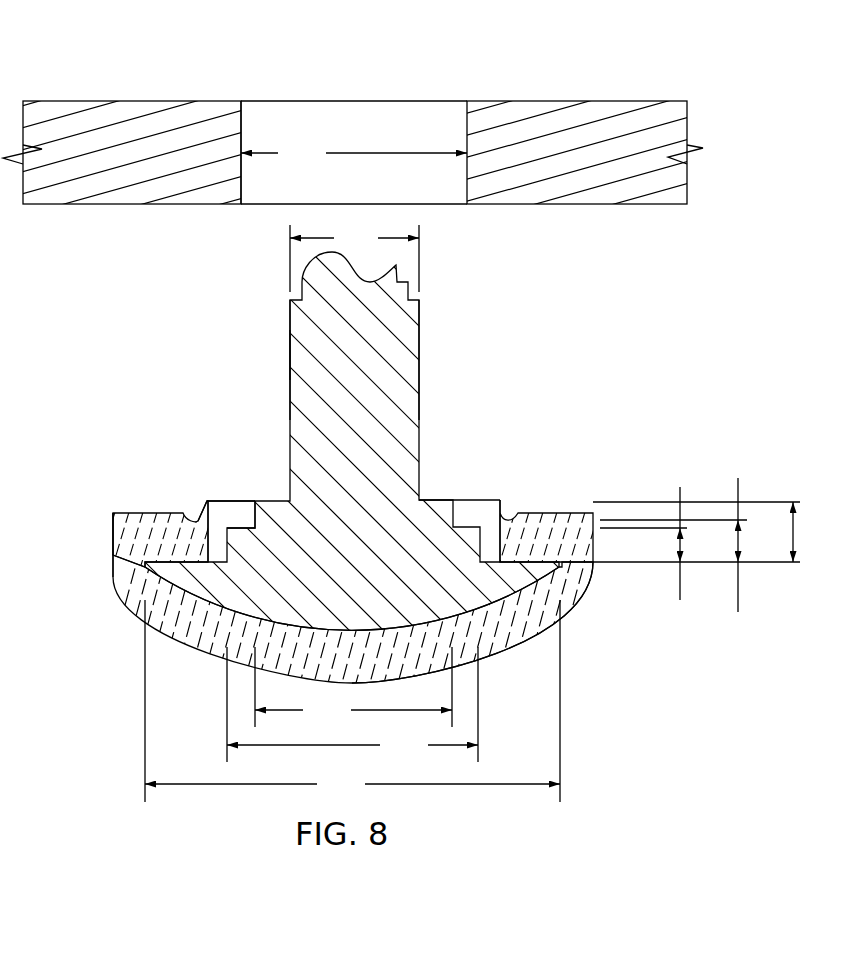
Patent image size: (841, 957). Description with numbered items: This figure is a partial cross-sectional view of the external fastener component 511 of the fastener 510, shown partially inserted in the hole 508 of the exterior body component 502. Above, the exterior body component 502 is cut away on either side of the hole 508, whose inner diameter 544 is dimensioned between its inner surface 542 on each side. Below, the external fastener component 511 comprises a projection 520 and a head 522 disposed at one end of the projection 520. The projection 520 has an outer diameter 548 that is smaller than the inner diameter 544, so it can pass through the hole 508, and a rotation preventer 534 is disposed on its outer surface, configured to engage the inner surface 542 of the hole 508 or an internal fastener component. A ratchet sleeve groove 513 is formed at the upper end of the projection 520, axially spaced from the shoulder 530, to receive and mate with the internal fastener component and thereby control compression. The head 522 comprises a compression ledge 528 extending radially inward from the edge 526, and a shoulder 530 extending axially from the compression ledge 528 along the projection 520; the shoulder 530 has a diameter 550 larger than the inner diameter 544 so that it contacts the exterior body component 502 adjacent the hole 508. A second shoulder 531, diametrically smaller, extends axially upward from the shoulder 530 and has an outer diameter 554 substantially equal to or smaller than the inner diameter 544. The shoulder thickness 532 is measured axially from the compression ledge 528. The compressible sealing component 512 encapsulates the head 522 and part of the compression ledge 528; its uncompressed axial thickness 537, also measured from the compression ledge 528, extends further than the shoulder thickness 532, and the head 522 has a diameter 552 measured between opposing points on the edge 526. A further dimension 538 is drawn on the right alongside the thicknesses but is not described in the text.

The exterior body component 502 is at (72, 120).
The hole 508 is at (422, 98).
The inner surface of the hole 542 is at (241, 113).
The inner diameter 544 is at (354, 153).
The fastener 510 is at (128, 365).
The external fastener component 511 is at (583, 624).
The compressible sealing component 512 is at (143, 603).
The ratchet sleeve groove 513 is at (262, 265).
The projection 520 is at (445, 345).
The head 522 is at (565, 578).
The edge 526 is at (150, 560).
The compression ledge 528 is at (150, 518).
The shoulder 530 is at (227, 503).
The second shoulder 531 is at (270, 500).
The shoulder thickness 532 is at (680, 540).
The rotation preventer 534 is at (290, 352).
The uncompressed axial thickness 537 is at (738, 537).
The base height dimension 538 is at (793, 532).
The outer diameter 548 is at (354, 258).
The diameter 550 is at (352, 704).
The diameter 552 is at (352, 701).
The outer diameter 554 is at (353, 687).